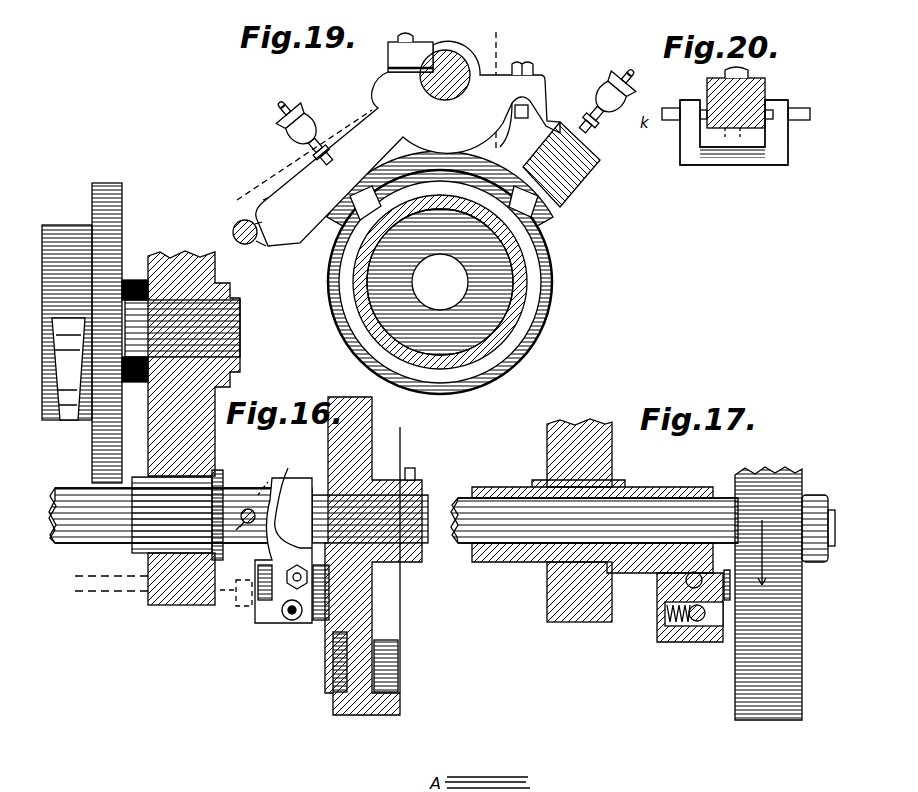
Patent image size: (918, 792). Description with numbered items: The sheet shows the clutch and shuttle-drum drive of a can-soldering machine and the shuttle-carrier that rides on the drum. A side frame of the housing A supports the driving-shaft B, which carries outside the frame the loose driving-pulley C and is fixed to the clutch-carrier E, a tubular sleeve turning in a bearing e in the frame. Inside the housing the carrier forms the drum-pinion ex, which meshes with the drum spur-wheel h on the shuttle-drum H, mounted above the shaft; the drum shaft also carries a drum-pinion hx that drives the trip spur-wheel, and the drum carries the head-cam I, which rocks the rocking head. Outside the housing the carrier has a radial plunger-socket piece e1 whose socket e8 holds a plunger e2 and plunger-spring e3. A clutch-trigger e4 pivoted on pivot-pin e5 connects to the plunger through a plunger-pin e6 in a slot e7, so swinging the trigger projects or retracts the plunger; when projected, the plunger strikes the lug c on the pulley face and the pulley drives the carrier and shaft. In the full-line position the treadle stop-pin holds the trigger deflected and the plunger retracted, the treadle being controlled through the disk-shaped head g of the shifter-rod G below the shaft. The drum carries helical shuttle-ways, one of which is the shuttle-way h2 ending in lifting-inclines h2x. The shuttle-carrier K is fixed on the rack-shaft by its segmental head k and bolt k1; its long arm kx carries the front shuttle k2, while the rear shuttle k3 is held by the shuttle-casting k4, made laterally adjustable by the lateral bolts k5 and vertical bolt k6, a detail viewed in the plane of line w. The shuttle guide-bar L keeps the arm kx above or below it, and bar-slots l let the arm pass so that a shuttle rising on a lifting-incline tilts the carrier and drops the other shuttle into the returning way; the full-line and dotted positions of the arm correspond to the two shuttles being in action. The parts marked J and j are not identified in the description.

In FIG. 19, the shuttle-drum H is at (501, 315).
In FIG. 16, the shuttle-drum H is at (67, 322).
In FIG. 16, the drum spur-wheel h is at (107, 182).
In FIG. 19, the shuttle-way h2 is at (346, 283).
In FIG. 16, the shuttle-way h2 is at (66, 443).
In FIG. 19, the lifting-incline h2x is at (415, 200).
In FIG. 16, the drum-pinion hx is at (68, 369).
In FIG. 19, the housing A is at (572, 393).
In FIG. 16, the housing A is at (162, 256).
In FIG. 17, the housing A is at (566, 424).
In FIG. 16, the driving-shaft B is at (370, 519).
In FIG. 17, the driving-shaft B is at (594, 520).
In FIG. 16, the driving-pulley C is at (373, 556).
In FIG. 17, the driving-pulley C is at (785, 593).
In FIG. 16, the lug c is at (333, 410).
In FIG. 17, the lug c is at (726, 576).
In FIG. 16, the bearing e is at (152, 478).
In FIG. 17, the bearing e is at (570, 563).
In FIG. 16, the drum-pinion ex is at (180, 515).
In FIG. 17, the drum-pinion ex is at (480, 548).
In FIG. 16, the clutch-carrier E is at (268, 480).
In FIG. 17, the clutch-carrier E is at (660, 575).
In FIG. 16, the plunger-socket piece e1 is at (283, 615).
In FIG. 17, the plunger-socket piece e1 is at (665, 642).
In FIG. 16, the plunger e2 is at (245, 569).
In FIG. 17, the plunger e2 is at (718, 642).
In FIG. 17, the plunger-spring e3 is at (665, 612).
In FIG. 16, the clutch-trigger e4 is at (268, 523).
In FIG. 16, the pivot-pin e5 is at (297, 577).
In FIG. 17, the pivot-pin e5 is at (686, 583).
In FIG. 16, the plunger-pin e6 is at (280, 612).
In FIG. 17, the plunger-pin e6 is at (695, 640).
In FIG. 16, the slot e7 is at (308, 628).
In FIG. 17, the slot e7 is at (680, 643).
In FIG. 17, the socket e8 is at (700, 611).
In FIG. 16, the shifter-rod G is at (111, 588).
In FIG. 16, the disk-shaped head g is at (237, 603).
In FIG. 19, the shuttle-carrier K is at (408, 143).
In FIG. 20, the shuttle-carrier K is at (752, 118).
In FIG. 19, the segmental head k is at (415, 52).
In FIG. 19, the bolt k1 is at (405, 35).
In FIG. 19, the shuttle k2 is at (345, 222).
In FIG. 19, the rear shuttle k3 is at (536, 205).
In FIG. 19, the shuttle-casting k4 is at (561, 164).
In FIG. 20, the shuttle-casting k4 is at (789, 148).
In FIG. 19, the lateral bolts k5 is at (530, 112).
In FIG. 20, the lateral bolts k5 is at (663, 114).
In FIG. 19, the vertical bolt k6 is at (534, 66).
In FIG. 20, the vertical bolt k6 is at (745, 70).
In FIG. 19, the arm kx is at (332, 192).
In FIG. 19, the pivot J is at (445, 75).
In FIG. 19, the pivot boss j is at (472, 60).
In FIG. 19, the section line w is at (493, 94).
In FIG. 19, the bar-slots l is at (249, 225).
In FIG. 19, the shuttle guide-bar L is at (233, 231).
In FIG. 19, the head-cam I is at (356, 213).